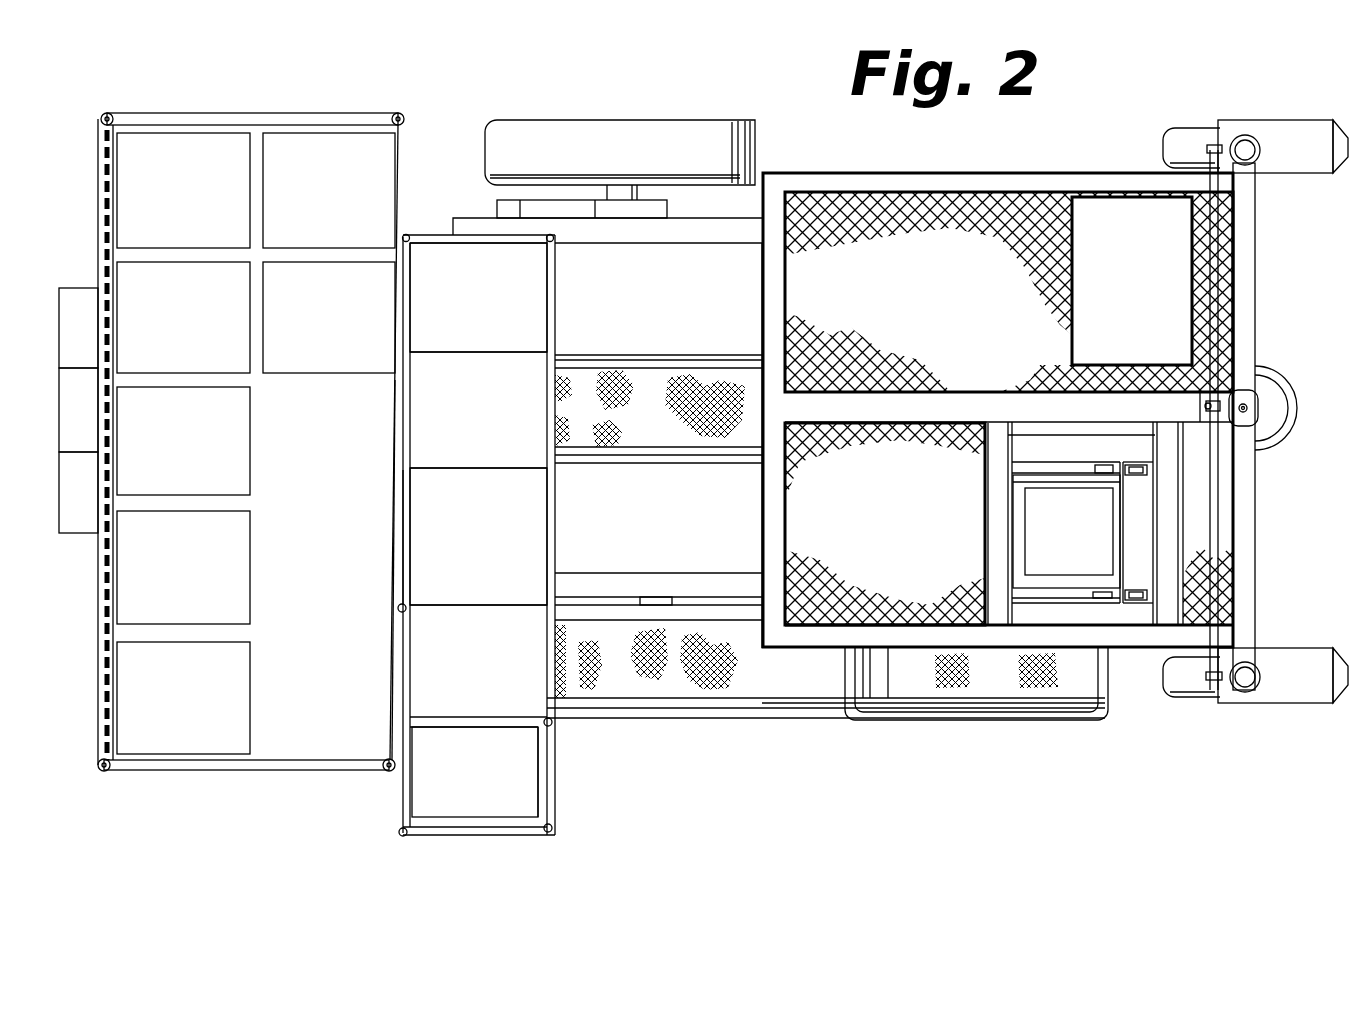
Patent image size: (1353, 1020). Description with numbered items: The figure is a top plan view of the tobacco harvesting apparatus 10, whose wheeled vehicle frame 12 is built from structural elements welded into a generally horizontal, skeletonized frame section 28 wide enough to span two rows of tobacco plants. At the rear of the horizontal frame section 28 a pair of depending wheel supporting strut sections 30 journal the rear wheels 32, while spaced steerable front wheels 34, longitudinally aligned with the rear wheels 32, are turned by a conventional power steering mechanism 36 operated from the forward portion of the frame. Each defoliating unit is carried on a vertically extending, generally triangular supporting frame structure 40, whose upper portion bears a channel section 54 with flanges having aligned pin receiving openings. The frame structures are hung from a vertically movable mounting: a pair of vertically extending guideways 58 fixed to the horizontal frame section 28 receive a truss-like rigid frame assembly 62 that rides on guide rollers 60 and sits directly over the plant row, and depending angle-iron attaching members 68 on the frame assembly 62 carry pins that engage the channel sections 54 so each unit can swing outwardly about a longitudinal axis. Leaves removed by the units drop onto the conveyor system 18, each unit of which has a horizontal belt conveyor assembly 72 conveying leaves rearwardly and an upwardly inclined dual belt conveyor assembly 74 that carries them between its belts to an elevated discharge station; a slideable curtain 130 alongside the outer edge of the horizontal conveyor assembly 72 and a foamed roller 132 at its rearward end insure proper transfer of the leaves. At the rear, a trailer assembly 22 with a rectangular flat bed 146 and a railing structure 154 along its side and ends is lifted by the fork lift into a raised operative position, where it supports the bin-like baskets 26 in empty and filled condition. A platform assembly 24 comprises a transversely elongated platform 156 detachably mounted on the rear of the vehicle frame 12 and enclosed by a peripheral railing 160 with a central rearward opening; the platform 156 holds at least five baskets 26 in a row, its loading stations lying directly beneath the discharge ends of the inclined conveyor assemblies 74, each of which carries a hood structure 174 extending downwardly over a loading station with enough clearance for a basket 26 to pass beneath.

The apparatus 10 is at (985, 125).
The wheeled vehicle frame 12 is at (838, 133).
The conveyor system 18 is at (672, 312).
The trailer assembly 22 is at (279, 112).
The platform assembly 24 is at (395, 548).
The baskets 26 is at (394, 839).
The horizontal frame section 28 is at (765, 507).
The wheel supporting strut sections 30 is at (578, 207).
The rear wheels 32 is at (645, 125).
The front wheels 34 is at (1178, 128).
The power steering mechanism 36 is at (1224, 451).
The supporting frame structure 40 is at (1042, 465).
The channel section 54 is at (1093, 597).
The guideways 58 is at (1140, 460).
The guide rollers 60 is at (1139, 478).
The rigid frame assembly 62 is at (1018, 518).
The attaching member 68 is at (1090, 465).
The horizontal belt conveyor assembly 72 is at (975, 709).
The inclined dual belt conveyor assembly 74 is at (655, 457).
The curtain 130 is at (1034, 720).
The roller 132 is at (877, 676).
The flat bed 146 is at (310, 748).
The railing structure 154 is at (200, 82).
The platform 156 is at (420, 497).
The peripheral railing 160 is at (402, 306).
The hood structure 174 is at (495, 366).